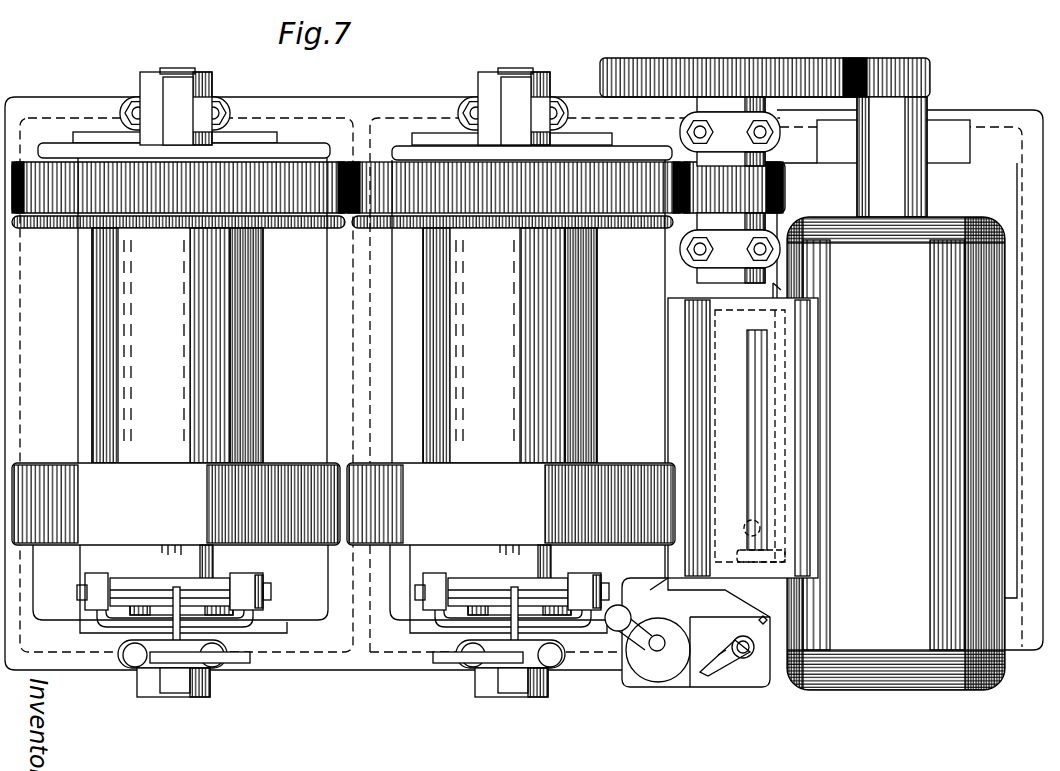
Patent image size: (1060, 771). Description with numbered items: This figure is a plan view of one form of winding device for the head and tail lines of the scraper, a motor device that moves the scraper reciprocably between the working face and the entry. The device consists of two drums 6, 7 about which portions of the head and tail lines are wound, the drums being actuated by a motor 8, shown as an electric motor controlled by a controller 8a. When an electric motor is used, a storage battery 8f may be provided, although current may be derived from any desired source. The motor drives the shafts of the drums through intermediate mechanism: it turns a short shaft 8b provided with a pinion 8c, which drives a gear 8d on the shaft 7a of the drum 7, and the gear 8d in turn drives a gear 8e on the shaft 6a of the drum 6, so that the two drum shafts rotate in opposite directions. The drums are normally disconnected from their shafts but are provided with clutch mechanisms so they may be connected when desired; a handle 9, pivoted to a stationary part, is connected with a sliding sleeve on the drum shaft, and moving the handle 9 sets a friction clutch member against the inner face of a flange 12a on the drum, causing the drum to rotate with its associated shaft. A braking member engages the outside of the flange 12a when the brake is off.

The drum 6 is at (177, 345).
The drum 7 is at (510, 345).
The shaft of drum 6 6a is at (205, 160).
The shaft of drum 7 7a is at (556, 150).
The motor 8 is at (896, 393).
The controller 8a is at (690, 678).
The short shaft 8b is at (712, 73).
The pinion 8c is at (718, 200).
The gear 8d is at (398, 182).
The gear 8e is at (47, 180).
The storage battery 8f is at (745, 377).
The handle 9 is at (238, 664).
The flange 12a is at (343, 504).